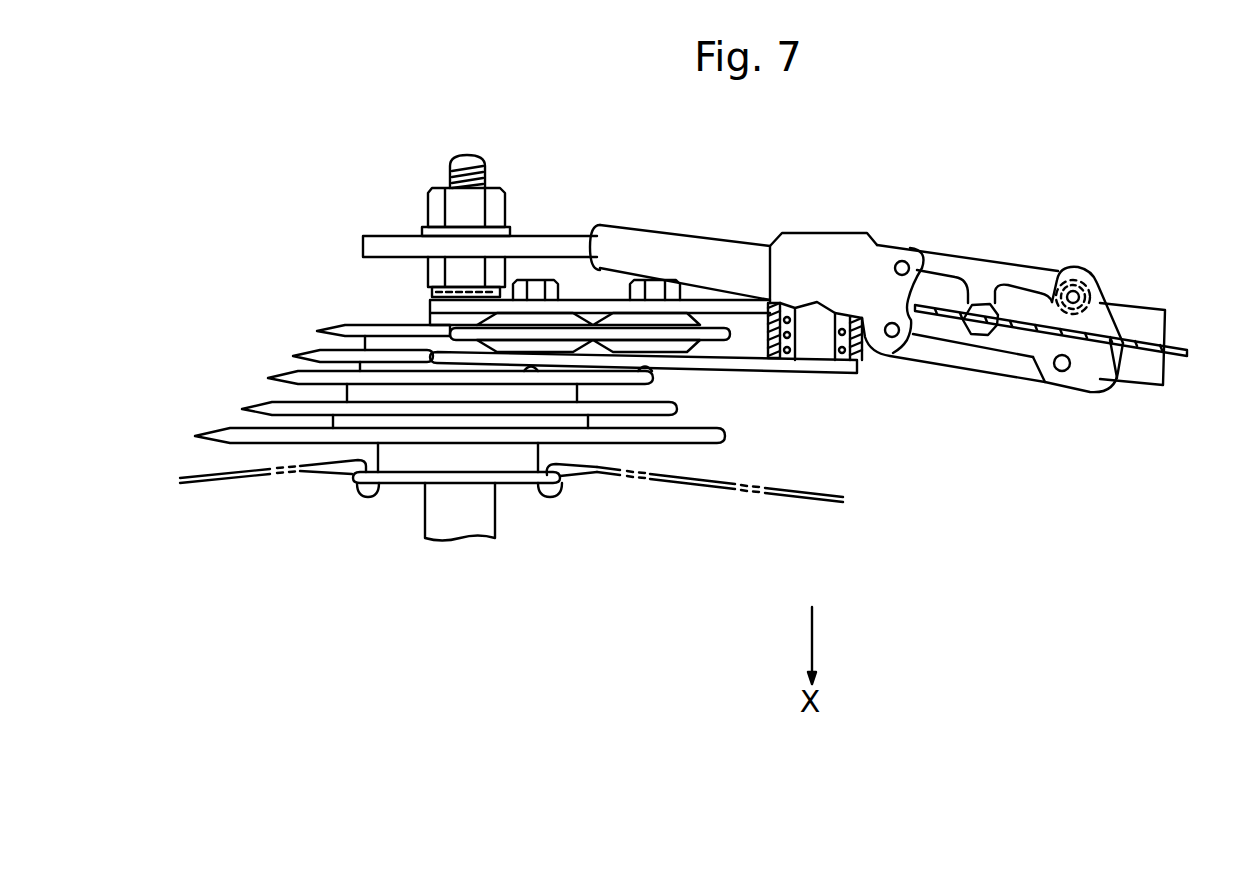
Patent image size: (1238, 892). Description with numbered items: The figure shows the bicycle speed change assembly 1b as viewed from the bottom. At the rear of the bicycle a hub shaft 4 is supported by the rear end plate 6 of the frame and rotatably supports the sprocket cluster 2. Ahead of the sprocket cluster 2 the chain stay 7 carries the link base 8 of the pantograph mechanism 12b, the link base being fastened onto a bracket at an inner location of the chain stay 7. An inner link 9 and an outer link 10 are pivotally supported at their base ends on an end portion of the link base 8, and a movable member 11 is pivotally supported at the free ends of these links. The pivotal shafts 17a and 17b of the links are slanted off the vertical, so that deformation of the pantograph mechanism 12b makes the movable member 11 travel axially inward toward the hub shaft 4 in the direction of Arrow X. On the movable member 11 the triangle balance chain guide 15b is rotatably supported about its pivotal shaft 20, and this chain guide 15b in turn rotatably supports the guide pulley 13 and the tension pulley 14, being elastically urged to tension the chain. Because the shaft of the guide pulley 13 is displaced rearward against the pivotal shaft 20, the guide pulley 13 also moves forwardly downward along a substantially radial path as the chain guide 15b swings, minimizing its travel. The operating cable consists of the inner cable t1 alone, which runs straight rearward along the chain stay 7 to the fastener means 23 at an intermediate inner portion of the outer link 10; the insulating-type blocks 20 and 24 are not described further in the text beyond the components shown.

The sprocket cluster 2 is at (264, 350).
The hub shaft 4 is at (470, 156).
The rear end plate 6 is at (380, 237).
The chain stay 7 is at (1132, 310).
The link base 8 is at (1082, 381).
The inner link 9 is at (978, 368).
The outer link 10 is at (942, 257).
The movable member 11 is at (822, 258).
The guide pulley 13 is at (672, 335).
The tension pulley 14 is at (530, 335).
The chain guide 15b is at (597, 303).
The pivotal shaft 17a is at (893, 338).
The pivotal shaft 17b is at (902, 261).
The pivotal shaft of the chain guide 20 is at (806, 352).
The fastener means 23 is at (992, 301).
The insulating block 24 is at (840, 348).
The speed change assembly 1b is at (936, 452).
The pantograph mechanism 12b is at (1008, 454).
The inner cable t1 is at (1127, 386).